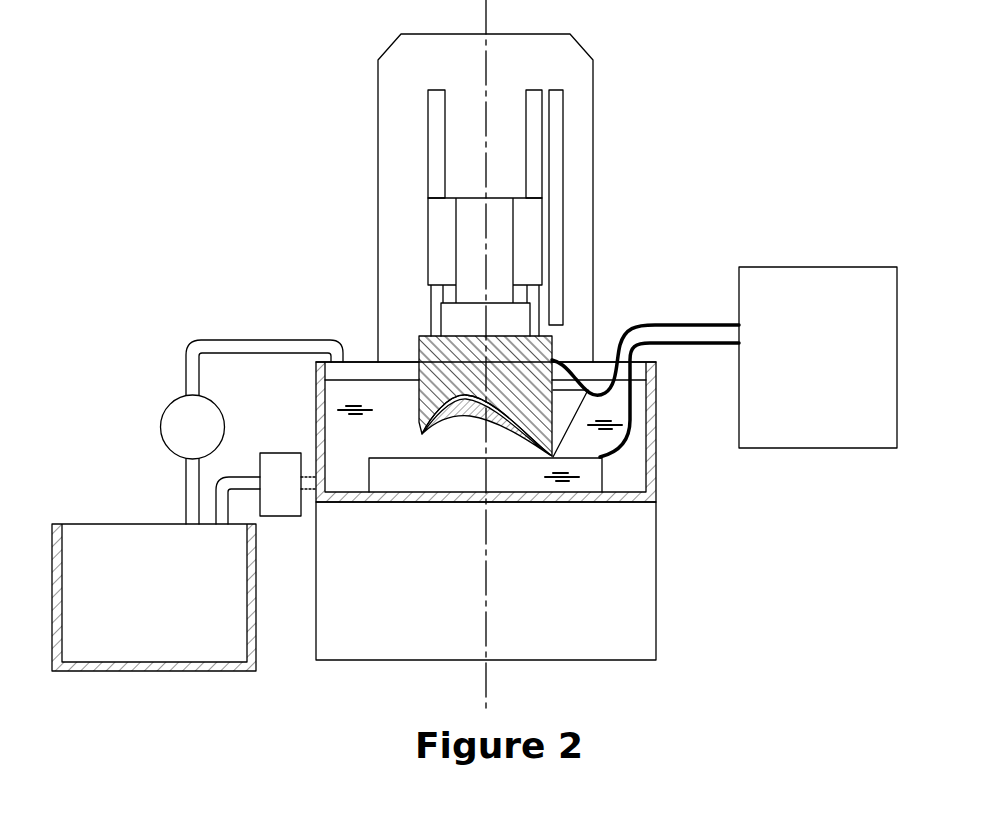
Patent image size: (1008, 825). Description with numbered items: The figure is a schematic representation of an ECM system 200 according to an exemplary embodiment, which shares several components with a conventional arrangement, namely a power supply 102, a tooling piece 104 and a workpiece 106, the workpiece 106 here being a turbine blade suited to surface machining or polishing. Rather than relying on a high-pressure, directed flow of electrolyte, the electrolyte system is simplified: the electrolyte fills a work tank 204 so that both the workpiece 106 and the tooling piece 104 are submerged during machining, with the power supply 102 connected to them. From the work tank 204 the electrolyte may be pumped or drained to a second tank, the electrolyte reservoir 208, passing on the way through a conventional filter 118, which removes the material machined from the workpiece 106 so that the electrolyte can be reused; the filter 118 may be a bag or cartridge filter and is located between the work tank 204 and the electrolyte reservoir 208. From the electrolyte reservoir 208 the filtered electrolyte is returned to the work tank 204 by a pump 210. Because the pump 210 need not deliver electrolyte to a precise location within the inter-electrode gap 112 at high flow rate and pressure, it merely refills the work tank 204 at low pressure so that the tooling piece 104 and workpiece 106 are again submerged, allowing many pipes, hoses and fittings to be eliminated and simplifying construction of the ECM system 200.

The ECM system 200 is at (181, 156).
The power supply 102 is at (830, 267).
The tooling piece 104 is at (428, 358).
The workpiece 106 is at (465, 412).
The inter-electrode gap 112 is at (420, 436).
The filter 118 is at (278, 517).
The work tank 204 is at (657, 441).
The electrolyte reservoir 208 is at (82, 671).
The pump 210 is at (167, 410).